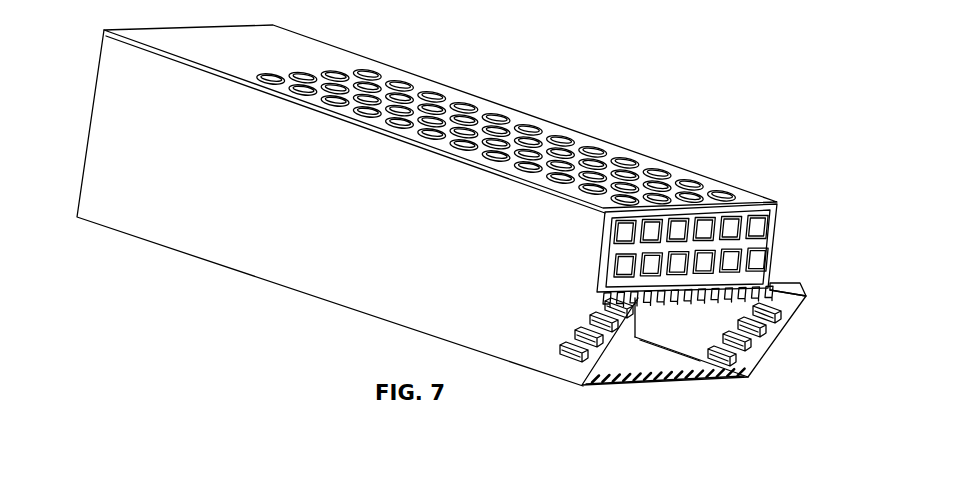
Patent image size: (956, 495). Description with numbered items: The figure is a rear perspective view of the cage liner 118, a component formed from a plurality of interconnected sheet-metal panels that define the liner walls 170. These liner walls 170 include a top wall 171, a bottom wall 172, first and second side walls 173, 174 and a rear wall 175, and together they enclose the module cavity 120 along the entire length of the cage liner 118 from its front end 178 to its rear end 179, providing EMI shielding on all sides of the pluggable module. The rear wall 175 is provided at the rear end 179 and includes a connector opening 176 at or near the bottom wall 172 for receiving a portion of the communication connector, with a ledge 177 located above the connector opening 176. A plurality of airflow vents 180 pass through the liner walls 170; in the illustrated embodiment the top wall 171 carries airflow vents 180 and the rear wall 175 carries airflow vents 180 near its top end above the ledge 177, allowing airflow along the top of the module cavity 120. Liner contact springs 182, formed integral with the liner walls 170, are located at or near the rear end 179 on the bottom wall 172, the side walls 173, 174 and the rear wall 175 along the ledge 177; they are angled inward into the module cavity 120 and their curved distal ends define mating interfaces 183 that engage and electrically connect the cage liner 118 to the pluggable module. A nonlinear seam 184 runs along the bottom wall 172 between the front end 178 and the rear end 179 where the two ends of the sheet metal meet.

The cage liner 118 is at (560, 72).
The liner walls 170 is at (295, 253).
The top wall 171 is at (542, 138).
The first side wall 173 is at (98, 162).
The front end 178 is at (92, 105).
The airflow vents 180 is at (633, 153).
The rear wall 175 is at (745, 242).
The ledge 177 is at (758, 290).
The second side wall 174 is at (718, 327).
The module cavity 120 is at (680, 378).
The connector opening 176 is at (652, 355).
The mating interfaces 183 is at (703, 290).
The seam 184 is at (637, 365).
The bottom wall 172 is at (662, 377).
The rear end 179 is at (802, 312).
The liner contact springs 182 is at (747, 288).